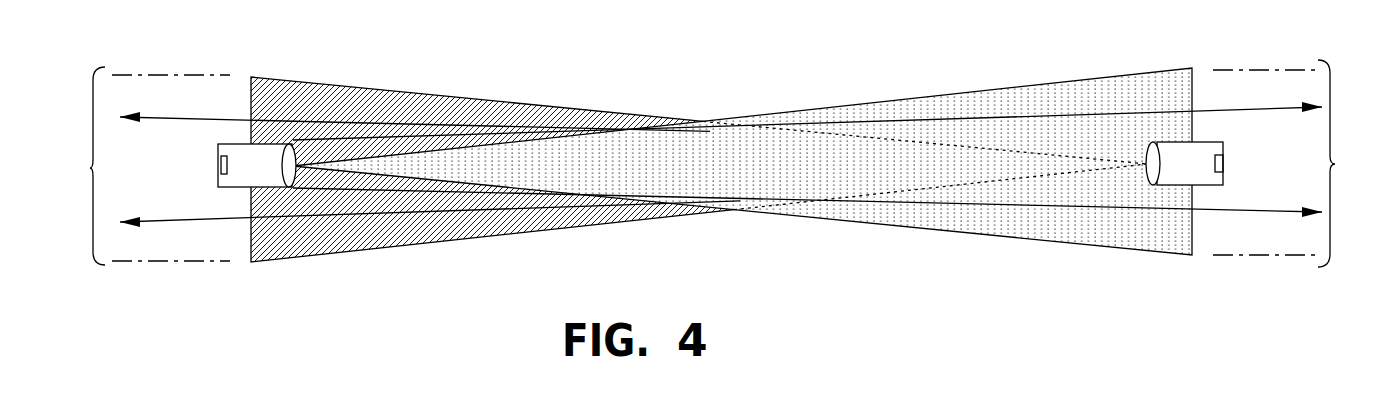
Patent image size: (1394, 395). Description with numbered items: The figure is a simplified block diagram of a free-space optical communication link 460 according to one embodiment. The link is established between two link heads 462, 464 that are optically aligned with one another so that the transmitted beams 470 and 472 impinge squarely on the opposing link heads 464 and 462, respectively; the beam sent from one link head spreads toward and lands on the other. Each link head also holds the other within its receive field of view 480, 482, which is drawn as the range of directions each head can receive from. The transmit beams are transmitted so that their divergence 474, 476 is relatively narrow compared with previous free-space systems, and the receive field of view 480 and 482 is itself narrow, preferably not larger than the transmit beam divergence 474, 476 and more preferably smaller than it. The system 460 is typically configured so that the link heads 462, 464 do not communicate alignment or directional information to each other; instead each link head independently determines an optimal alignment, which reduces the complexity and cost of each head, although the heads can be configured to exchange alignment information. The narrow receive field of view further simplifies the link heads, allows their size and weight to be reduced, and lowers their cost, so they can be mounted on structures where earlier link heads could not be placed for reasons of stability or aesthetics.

The free-space optical communication link 460 is at (716, 223).
The link head 462 is at (218, 150).
The link head 464 is at (1217, 145).
The transmitted beam 470 is at (1072, 245).
The transmitted beam 472 is at (313, 254).
The transmit beam divergence 474 is at (1301, 163).
The transmit beam divergence 476 is at (136, 166).
The receive field of view 480 is at (1252, 213).
The receive field of view 482 is at (198, 222).